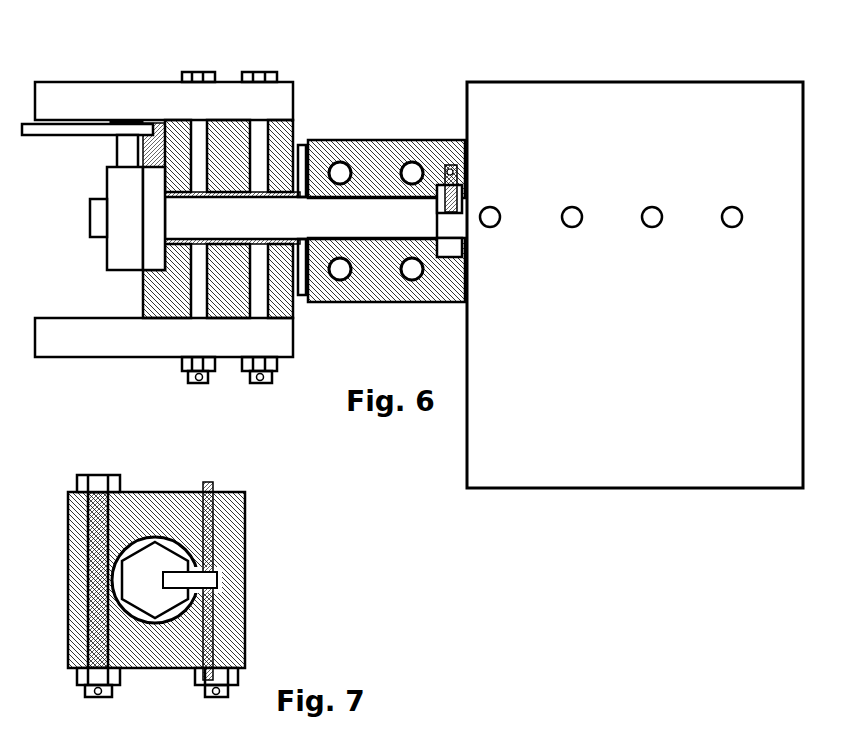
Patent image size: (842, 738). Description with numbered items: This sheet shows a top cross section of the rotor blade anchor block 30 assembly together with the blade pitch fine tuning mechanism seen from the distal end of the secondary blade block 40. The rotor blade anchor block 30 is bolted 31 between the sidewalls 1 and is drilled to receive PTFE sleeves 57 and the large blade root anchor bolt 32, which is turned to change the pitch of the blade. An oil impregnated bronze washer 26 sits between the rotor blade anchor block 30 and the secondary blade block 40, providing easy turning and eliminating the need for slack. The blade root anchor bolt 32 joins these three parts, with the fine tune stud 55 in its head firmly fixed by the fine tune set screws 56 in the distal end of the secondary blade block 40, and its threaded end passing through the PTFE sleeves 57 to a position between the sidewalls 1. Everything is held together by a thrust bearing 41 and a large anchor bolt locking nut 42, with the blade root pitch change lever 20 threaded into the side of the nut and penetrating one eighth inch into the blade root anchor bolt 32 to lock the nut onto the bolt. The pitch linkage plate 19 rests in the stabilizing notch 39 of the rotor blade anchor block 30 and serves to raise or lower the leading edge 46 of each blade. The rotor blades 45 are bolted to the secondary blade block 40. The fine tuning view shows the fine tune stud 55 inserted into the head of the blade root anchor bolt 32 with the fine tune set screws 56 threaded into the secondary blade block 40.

In FIG. 6, the sidewalls 1 is at (203, 98).
In FIG. 6, the pitch linkage plate 19 is at (77, 132).
In FIG. 6, the blade root pitch change lever 20 is at (112, 147).
In FIG. 6, the oil impregnated bronze washer 26 is at (124, 116).
In FIG. 6, the rotor blade anchor block 30 is at (218, 219).
In FIG. 6, the bolts 31 is at (248, 62).
In FIG. 6, the blade root anchor bolt 32 is at (87, 220).
In FIG. 7, the blade root anchor bolt 32 is at (152, 562).
In FIG. 6, the stabilizing notch 39 is at (157, 128).
In FIG. 6, the secondary blade block 40 is at (386, 221).
In FIG. 7, the secondary blade block 40 is at (156, 580).
In FIG. 6, the thrust bearing 41 is at (160, 250).
In FIG. 6, the anchor bolt locking nut 42 is at (127, 240).
In FIG. 6, the rotor blades 45 is at (632, 107).
In FIG. 6, the leading edge of each blade 46 is at (516, 80).
In FIG. 6, the fine tune stud 55 is at (452, 195).
In FIG. 7, the fine tune stud 55 is at (198, 580).
In FIG. 6, the fine tune set screws 56 is at (448, 172).
In FIG. 7, the fine tune set screws 56 is at (216, 480).
In FIG. 6, the PTFE sleeves 57 is at (170, 192).